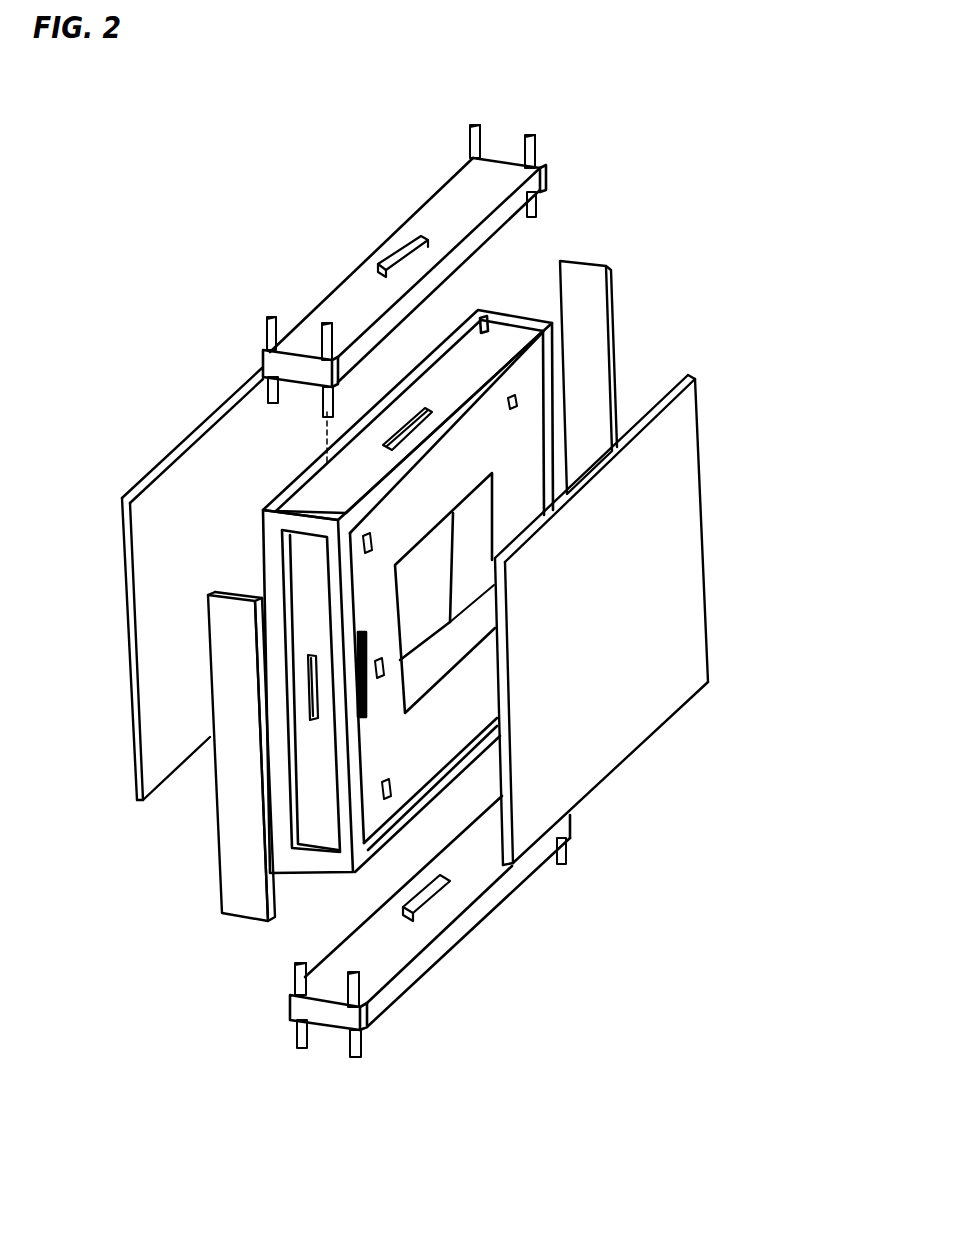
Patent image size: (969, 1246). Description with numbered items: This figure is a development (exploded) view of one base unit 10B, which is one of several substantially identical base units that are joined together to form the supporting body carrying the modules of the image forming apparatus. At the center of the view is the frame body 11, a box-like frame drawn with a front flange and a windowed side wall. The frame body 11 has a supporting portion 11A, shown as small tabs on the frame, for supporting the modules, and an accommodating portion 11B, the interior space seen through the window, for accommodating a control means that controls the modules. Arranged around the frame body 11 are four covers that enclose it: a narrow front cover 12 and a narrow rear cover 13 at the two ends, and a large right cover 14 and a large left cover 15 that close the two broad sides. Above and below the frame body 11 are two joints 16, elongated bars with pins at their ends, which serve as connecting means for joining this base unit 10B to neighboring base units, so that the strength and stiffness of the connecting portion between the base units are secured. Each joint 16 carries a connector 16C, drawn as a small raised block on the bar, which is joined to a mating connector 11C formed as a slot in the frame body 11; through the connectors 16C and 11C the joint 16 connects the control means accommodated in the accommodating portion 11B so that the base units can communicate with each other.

The base unit 10B is at (626, 194).
The frame body 11 is at (492, 355).
The supporting portion 11A is at (513, 406).
The accommodating portion 11B is at (440, 660).
The connector 11C is at (405, 441).
The front cover 12 is at (245, 906).
The rear cover 13 is at (583, 303).
The right cover 14 is at (665, 700).
The left cover 15 is at (153, 763).
The joint 16 is at (430, 208).
The connector 16C is at (387, 257).